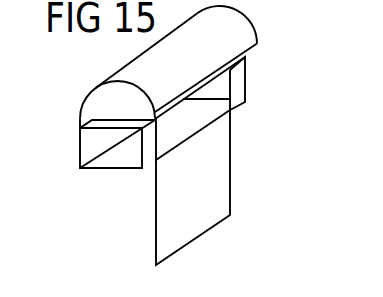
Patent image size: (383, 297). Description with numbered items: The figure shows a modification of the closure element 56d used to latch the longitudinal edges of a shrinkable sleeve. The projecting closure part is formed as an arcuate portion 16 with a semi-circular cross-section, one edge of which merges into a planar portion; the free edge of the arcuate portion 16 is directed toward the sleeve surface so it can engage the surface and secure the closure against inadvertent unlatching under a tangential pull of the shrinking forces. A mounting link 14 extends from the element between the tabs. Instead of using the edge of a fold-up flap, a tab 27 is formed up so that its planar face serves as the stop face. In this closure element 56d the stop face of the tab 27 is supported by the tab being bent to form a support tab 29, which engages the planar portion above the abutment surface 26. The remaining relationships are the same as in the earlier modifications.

The mounting link 14 is at (221, 176).
The arcuate portion 16 is at (253, 38).
The abutment surface 26 is at (103, 168).
The tab 27 is at (150, 153).
The support tab 29 is at (103, 127).
The closure element 56d is at (123, 64).